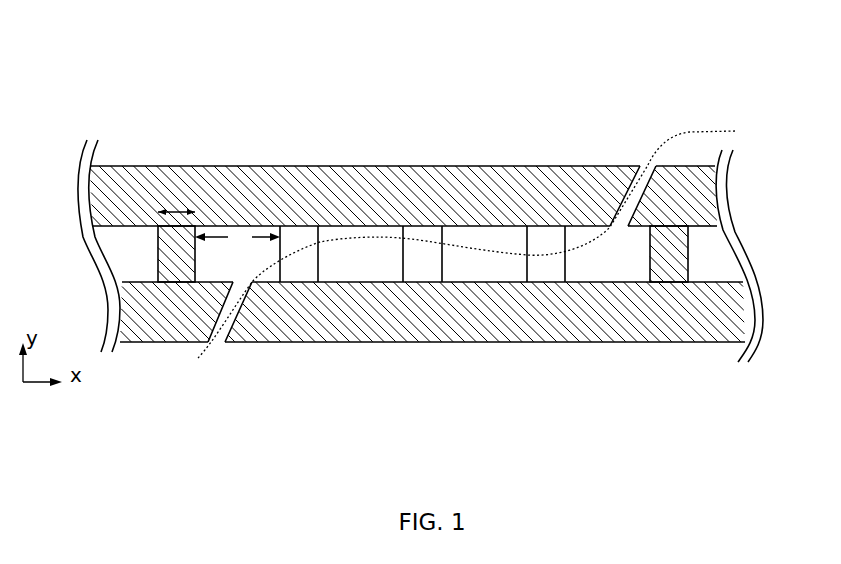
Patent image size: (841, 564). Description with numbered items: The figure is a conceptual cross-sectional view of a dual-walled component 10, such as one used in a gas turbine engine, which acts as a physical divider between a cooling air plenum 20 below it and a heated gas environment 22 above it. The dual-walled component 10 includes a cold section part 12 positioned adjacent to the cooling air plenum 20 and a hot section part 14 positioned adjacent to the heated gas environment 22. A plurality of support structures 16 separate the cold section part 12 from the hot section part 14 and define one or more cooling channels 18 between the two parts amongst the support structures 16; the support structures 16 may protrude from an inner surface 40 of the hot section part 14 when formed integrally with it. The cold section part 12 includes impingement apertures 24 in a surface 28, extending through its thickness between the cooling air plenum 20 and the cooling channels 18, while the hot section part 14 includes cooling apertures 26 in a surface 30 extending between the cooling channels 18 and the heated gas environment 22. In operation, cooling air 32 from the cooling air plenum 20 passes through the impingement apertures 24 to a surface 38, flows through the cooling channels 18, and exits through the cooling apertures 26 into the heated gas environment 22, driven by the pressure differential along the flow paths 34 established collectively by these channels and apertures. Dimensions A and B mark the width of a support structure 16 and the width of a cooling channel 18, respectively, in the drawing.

The dual-walled component 10 is at (145, 142).
The cold section part 12 is at (592, 320).
The hot section part 14 is at (487, 180).
The support structures 16 is at (290, 226).
The cooling channels 18 is at (342, 274).
The cooling air plenum 20 is at (387, 394).
The heated gas environment 22 is at (362, 87).
The impingement apertures 24 is at (222, 345).
The cooling apertures 26 is at (647, 165).
The surface 28 is at (503, 343).
The surface 30 is at (522, 165).
The cooling air 32 is at (198, 365).
The flow paths 34 is at (715, 142).
The surface 38 is at (712, 273).
The inner surface 40 is at (712, 232).
The wall width A is at (176, 199).
The channel width B is at (237, 238).